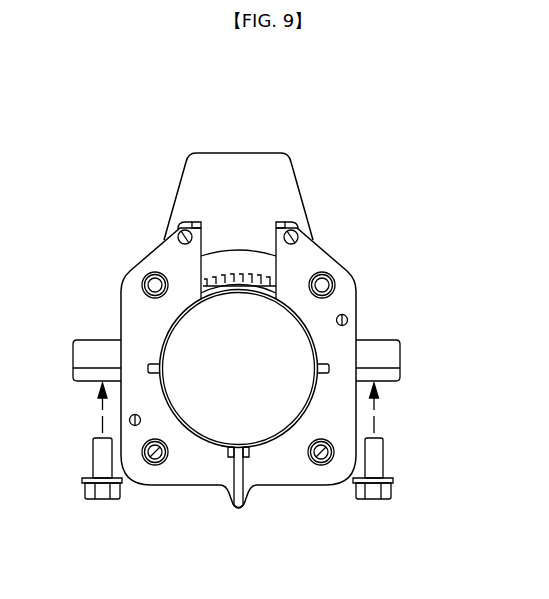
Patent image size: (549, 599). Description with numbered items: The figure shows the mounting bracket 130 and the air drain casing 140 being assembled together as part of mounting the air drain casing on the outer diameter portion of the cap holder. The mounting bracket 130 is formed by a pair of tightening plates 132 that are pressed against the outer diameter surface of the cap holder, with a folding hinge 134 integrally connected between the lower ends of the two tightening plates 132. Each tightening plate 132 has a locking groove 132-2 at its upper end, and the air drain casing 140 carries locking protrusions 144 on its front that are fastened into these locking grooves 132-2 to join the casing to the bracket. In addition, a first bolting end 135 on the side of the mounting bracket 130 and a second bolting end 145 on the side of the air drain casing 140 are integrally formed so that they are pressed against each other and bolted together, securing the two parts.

The mounting bracket 130 is at (358, 268).
The tightening plates 132 is at (132, 300).
The locking groove 132-2 is at (178, 236).
The folding hinge 134 is at (238, 513).
The first bolting end 135 is at (395, 373).
The air drain casing 140 is at (296, 158).
The locking protrusions 144 is at (181, 229).
The second bolting end 145 is at (395, 356).